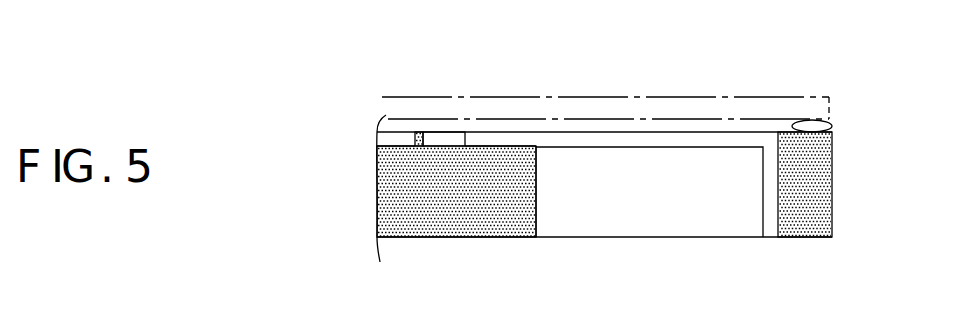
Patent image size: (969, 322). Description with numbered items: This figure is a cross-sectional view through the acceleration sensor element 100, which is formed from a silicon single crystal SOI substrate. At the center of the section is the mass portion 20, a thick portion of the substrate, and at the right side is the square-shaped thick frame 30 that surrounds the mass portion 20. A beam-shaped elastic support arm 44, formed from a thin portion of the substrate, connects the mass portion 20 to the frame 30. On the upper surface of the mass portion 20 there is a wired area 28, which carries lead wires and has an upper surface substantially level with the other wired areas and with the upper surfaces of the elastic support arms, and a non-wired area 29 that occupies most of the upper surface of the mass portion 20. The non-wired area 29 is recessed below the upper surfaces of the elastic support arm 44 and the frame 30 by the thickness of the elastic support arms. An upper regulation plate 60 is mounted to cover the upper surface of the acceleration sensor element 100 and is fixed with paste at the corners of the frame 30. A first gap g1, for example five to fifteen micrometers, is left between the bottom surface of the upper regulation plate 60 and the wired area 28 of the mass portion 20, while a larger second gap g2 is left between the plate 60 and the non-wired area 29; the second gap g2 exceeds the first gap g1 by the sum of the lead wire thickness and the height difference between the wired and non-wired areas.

The acceleration sensor element 100 is at (551, 179).
The mass portion 20 is at (483, 220).
The wired area 28 is at (413, 131).
The elastic support arm 44 is at (442, 138).
The non-wired area 29 is at (650, 218).
The frame 30 is at (633, 138).
The upper regulation plate 60 is at (787, 108).
The first gap g1 is at (571, 178).
The second gap g2 is at (724, 177).